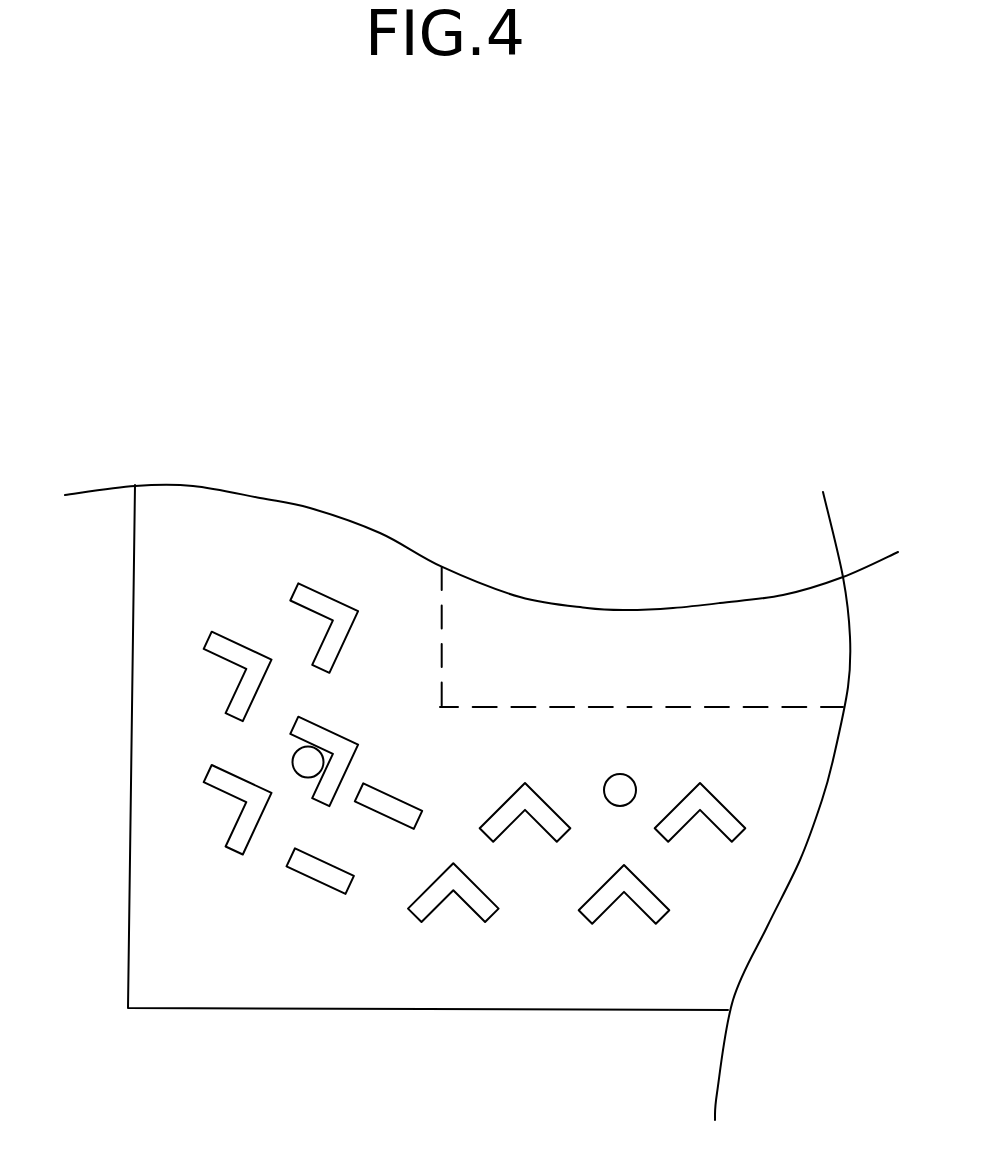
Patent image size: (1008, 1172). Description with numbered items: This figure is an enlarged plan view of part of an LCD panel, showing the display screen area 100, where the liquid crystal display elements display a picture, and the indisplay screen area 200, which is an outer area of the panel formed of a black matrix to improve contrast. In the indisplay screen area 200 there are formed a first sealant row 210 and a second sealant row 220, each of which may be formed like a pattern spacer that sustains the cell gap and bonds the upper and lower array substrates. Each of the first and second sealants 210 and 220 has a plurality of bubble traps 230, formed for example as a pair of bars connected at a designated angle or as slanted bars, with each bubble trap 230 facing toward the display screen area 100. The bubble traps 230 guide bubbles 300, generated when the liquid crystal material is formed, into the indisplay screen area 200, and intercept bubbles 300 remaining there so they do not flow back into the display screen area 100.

The display screen area 100 is at (601, 638).
The indisplay screen area 200 is at (255, 981).
The first sealant row 210 is at (340, 592).
The second sealant row 220 is at (235, 625).
The bubble trap 230 is at (592, 920).
The bubble 300 is at (300, 762).